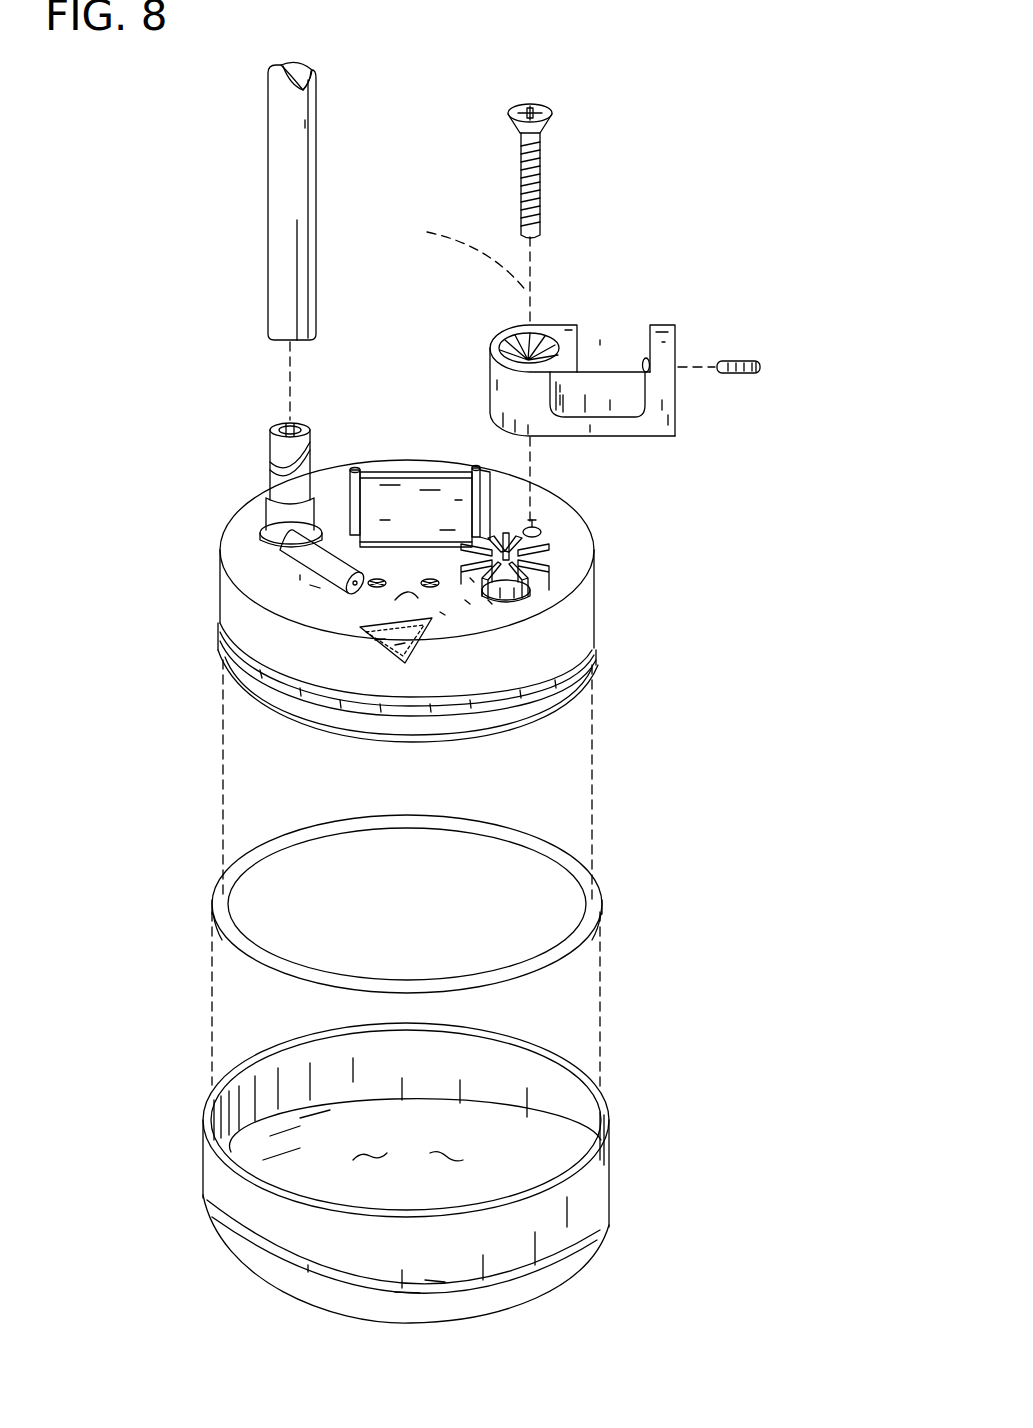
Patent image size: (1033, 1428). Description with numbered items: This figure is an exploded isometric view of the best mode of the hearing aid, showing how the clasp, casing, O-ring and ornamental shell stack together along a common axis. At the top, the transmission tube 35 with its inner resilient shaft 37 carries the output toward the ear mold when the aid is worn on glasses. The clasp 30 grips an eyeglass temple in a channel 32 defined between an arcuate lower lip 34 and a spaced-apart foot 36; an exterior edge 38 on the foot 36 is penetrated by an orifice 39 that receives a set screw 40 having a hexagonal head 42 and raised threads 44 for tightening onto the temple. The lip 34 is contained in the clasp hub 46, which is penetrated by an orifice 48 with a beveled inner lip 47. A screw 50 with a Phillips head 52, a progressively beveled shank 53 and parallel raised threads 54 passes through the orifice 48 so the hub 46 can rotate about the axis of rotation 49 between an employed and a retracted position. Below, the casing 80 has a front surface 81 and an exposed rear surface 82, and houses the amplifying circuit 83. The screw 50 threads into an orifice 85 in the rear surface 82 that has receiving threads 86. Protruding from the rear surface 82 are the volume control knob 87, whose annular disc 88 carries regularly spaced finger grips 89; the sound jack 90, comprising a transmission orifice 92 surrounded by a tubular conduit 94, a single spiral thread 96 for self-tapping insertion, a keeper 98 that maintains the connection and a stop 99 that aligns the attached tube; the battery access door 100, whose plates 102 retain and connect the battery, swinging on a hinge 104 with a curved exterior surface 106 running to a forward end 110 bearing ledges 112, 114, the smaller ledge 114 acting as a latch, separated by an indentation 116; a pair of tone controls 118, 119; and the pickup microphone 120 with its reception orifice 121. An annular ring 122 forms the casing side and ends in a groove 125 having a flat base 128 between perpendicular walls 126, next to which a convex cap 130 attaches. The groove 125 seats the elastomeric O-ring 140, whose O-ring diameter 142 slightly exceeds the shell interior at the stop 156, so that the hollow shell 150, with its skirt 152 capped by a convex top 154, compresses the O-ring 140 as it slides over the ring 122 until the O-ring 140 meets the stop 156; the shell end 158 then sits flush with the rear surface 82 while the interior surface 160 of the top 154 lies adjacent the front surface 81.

The clasp 30 is at (582, 367).
The channel 32 is at (604, 396).
The arcuate lower lip 34 is at (563, 397).
The transmission tube 35 is at (258, 208).
The foot 36 is at (633, 413).
The inner resilient shaft 37 is at (303, 70).
The exterior edge 38 is at (677, 340).
The orifice 39 is at (643, 357).
The set screw 40 is at (794, 375).
The hexagonal head 42 is at (742, 358).
The raised threads 44 is at (757, 377).
The clasp hub 46 is at (497, 393).
The beveled inner lip 47 is at (538, 325).
The orifice 48 is at (522, 338).
The axis of rotation 49 is at (457, 369).
The screw 50 is at (530, 291).
The Phillips head 52 is at (553, 104).
The screw shank 53 is at (517, 124).
The raised threads 54 is at (540, 195).
The casing 80 is at (395, 620).
The front surface 81 is at (425, 740).
The rear surface 82 is at (425, 600).
The amplifying circuit 83 is at (385, 605).
The orifice 85 is at (537, 517).
The receiving threads 86 is at (538, 528).
The volume control knob 87 is at (587, 581).
The annular disc 88 is at (538, 598).
The finger grips 89 is at (532, 553).
The sound jack 90 is at (234, 431).
The transmission orifice 92 is at (288, 418).
The tubular conduit 94 is at (273, 453).
The spiral thread 96 is at (268, 480).
The keeper 98 is at (277, 520).
The stop 99 is at (273, 537).
The battery access door 100 is at (391, 445).
The plates 102 is at (350, 472).
The hinge 104 is at (490, 477).
The battery door surface 106 is at (353, 470).
The forward end 110 is at (418, 556).
The ledge 112 is at (436, 590).
The ledge 114 is at (470, 600).
The indentation 116 is at (440, 612).
The tone control 118 is at (490, 600).
The tone control 119 is at (470, 578).
The pickup microphone 120 is at (292, 562).
The reception orifice 121 is at (350, 615).
The annular ring 122 is at (350, 690).
The groove 125 is at (461, 689).
The perpendicular walls 126 is at (598, 645).
The flat base 128 is at (578, 701).
The convex cap 130 is at (313, 722).
The O-ring 140 is at (473, 895).
The O-ring diameter 142 is at (603, 890).
The ornamental exterior shell 150 is at (457, 1185).
The skirt 152 is at (582, 1232).
The convex top 154 is at (495, 1302).
The stop 156 is at (552, 1132).
The shell end 158 is at (278, 1043).
The interior surface 160 is at (408, 1160).